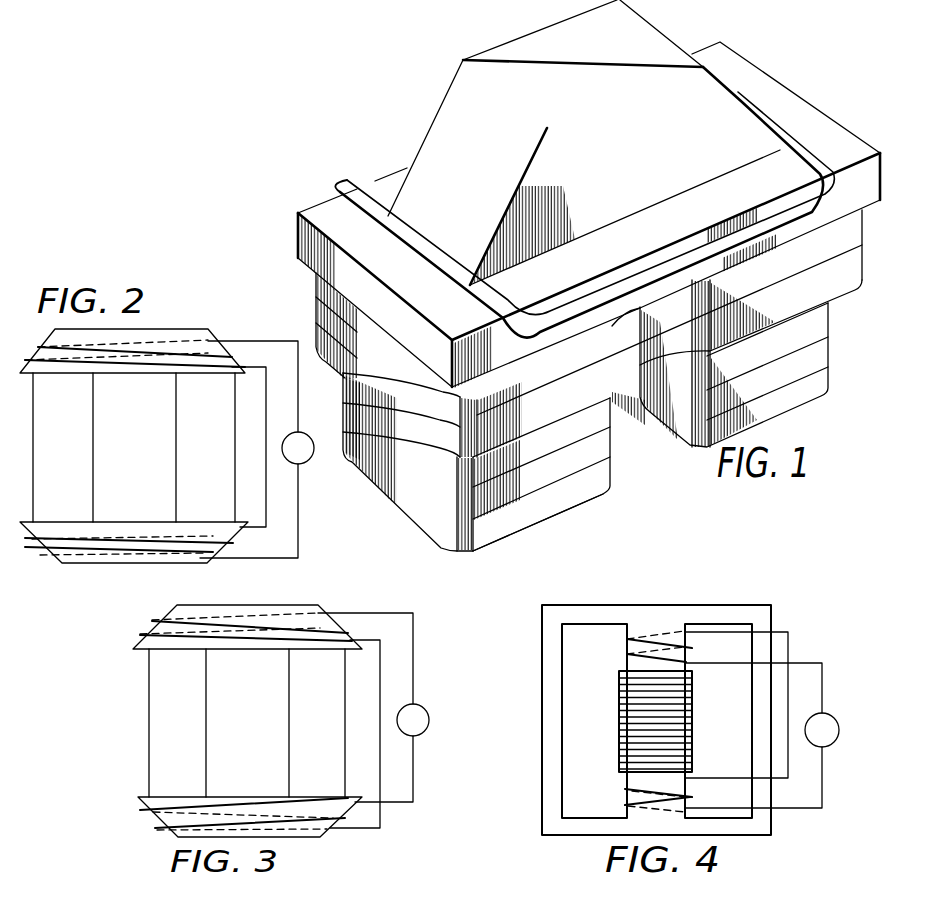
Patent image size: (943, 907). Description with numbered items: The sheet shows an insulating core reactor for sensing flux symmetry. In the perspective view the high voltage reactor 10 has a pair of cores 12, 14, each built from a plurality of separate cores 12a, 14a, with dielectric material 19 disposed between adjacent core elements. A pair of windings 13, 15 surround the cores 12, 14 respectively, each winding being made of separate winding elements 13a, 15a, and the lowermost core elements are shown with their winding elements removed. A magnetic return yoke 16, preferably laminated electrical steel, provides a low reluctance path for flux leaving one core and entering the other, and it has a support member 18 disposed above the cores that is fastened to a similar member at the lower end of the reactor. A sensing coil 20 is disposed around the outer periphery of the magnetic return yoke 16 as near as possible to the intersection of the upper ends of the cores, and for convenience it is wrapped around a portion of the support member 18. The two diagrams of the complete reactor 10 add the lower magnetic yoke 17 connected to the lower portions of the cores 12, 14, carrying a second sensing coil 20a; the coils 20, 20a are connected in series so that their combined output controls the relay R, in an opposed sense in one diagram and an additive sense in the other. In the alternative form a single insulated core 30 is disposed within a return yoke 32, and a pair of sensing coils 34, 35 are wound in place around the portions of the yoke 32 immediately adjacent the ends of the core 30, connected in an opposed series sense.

In FIG. 1, the high voltage reactor 10 is at (323, 186).
In FIG. 2, the high voltage reactor 10 is at (108, 567).
In FIG. 3, the high voltage reactor 10 is at (195, 600).
In FIG. 1, the core 12 is at (616, 441).
In FIG. 2, the core 12 is at (90, 427).
In FIG. 3, the core 12 is at (148, 700).
In FIG. 1, the separate core 12a is at (604, 490).
In FIG. 1, the winding 13 is at (313, 290).
In FIG. 1, the separate winding element 13a is at (325, 302).
In FIG. 1, the core 14 is at (832, 352).
In FIG. 2, the core 14 is at (177, 420).
In FIG. 3, the core 14 is at (288, 700).
In FIG. 1, the separate core 14a is at (830, 320).
In FIG. 1, the winding 15 is at (863, 247).
In FIG. 1, the separate winding element 15a is at (858, 287).
In FIG. 1, the magnetic return yoke 16 is at (518, 50).
In FIG. 2, the magnetic return yoke 16 is at (182, 335).
In FIG. 3, the magnetic return yoke 16 is at (297, 604).
In FIG. 2, the lower magnetic yoke 17 is at (72, 563).
In FIG. 3, the lower magnetic yoke 17 is at (262, 795).
In FIG. 1, the support member 18 is at (312, 212).
In FIG. 1, the dielectric material 19 is at (548, 497).
In FIG. 1, the sensing coil 20 is at (343, 179).
In FIG. 2, the sensing coil 20 is at (257, 338).
In FIG. 3, the sensing coil 20 is at (360, 613).
In FIG. 2, the sensing coil 20a is at (278, 560).
In FIG. 3, the sensing coil 20a is at (348, 832).
In FIG. 4, the insulated core 30 is at (618, 706).
In FIG. 4, the return yoke 32 is at (668, 604).
In FIG. 4, the sensing coil 34 is at (622, 640).
In FIG. 4, the lower winding turns 35 is at (625, 789).